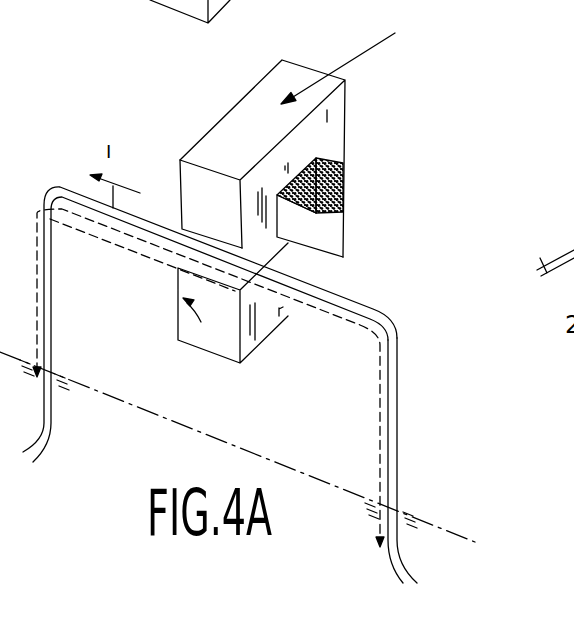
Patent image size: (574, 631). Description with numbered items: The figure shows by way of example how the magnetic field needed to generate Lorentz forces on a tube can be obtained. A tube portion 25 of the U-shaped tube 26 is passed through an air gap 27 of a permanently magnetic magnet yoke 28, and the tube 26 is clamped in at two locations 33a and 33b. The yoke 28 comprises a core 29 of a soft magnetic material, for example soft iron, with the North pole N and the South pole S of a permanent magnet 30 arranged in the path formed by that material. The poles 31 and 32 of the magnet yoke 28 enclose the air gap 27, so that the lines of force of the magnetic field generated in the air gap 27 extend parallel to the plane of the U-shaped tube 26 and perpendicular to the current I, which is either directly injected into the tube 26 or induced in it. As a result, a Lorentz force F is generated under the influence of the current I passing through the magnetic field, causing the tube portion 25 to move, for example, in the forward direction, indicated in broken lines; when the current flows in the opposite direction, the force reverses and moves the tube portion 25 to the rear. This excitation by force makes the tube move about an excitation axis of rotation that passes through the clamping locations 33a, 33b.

The tube portion 25 is at (360, 305).
The U-shaped tube 26 is at (398, 436).
The air gap 27 is at (346, 256).
The magnet yoke 28 is at (423, 23).
The core 29 is at (253, 320).
The permanent magnet 30 is at (346, 165).
The pole 31 is at (200, 192).
The pole 32 is at (190, 327).
The clamping location 33a is at (53, 376).
The clamping location 33b is at (372, 500).